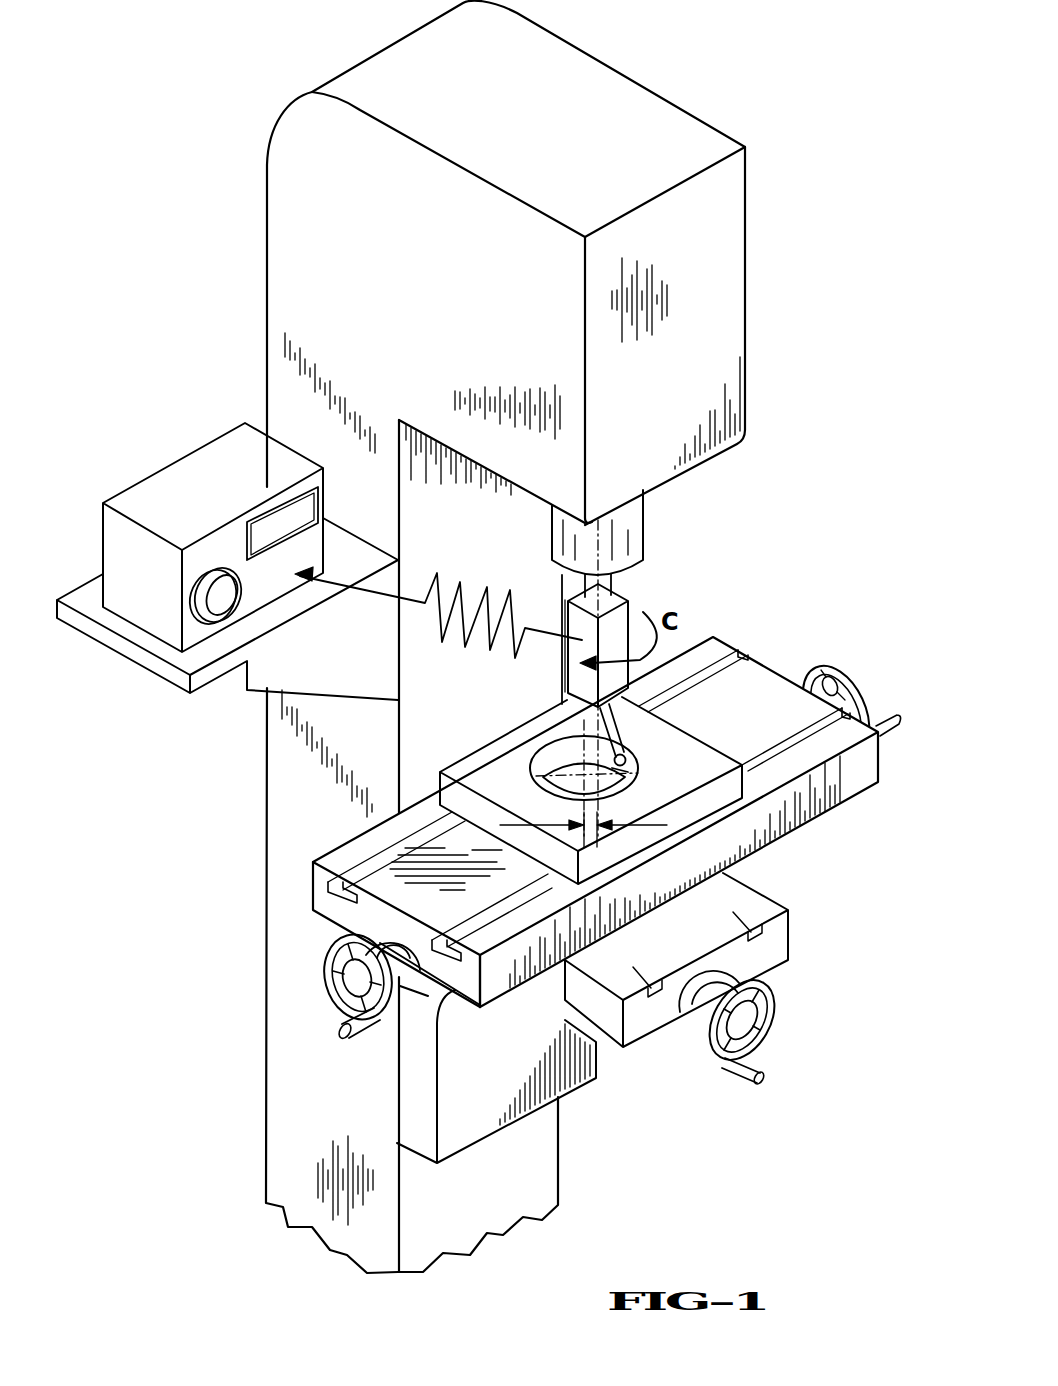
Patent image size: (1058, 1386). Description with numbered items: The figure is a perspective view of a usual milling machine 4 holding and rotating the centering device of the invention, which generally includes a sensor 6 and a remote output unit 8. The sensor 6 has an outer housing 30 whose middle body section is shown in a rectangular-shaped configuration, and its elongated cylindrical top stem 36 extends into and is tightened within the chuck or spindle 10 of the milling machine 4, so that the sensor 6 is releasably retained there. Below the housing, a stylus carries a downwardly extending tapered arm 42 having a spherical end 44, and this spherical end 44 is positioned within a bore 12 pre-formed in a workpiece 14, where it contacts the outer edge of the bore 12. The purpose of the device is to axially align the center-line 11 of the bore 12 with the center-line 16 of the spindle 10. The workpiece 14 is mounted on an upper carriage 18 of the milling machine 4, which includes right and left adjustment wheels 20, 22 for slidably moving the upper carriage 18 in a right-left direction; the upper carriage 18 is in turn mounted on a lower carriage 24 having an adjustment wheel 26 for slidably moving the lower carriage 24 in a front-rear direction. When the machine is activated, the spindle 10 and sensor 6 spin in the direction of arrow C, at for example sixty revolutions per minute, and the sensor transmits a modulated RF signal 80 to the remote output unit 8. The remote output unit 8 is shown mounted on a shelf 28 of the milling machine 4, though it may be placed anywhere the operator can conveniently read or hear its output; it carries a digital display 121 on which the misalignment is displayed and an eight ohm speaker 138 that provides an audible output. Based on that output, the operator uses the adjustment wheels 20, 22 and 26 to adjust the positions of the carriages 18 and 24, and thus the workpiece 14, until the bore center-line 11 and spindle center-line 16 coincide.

The milling machine 4 is at (747, 214).
The sensor 6 is at (628, 680).
The remote output unit 8 is at (283, 573).
The spindle 10 is at (627, 518).
The center-line of bore 11 is at (532, 773).
The bore 12 is at (551, 762).
The workpiece 14 is at (641, 794).
The center-line of spindle 16 is at (636, 771).
The upper carriage 18 is at (860, 775).
The right adjustment wheel 20 is at (835, 668).
The left adjustment wheel 22 is at (333, 957).
The lower carriage 24 is at (778, 925).
The adjustment wheel 26 is at (773, 1013).
The shelf 28 is at (125, 648).
The outer housing 30 is at (578, 682).
The top stem 36 is at (590, 588).
The tapered arm 42 is at (612, 720).
The spherical end 44 is at (632, 756).
The modulated RF signal 80 is at (463, 637).
The digital display 121 is at (322, 505).
The speaker 138 is at (217, 600).